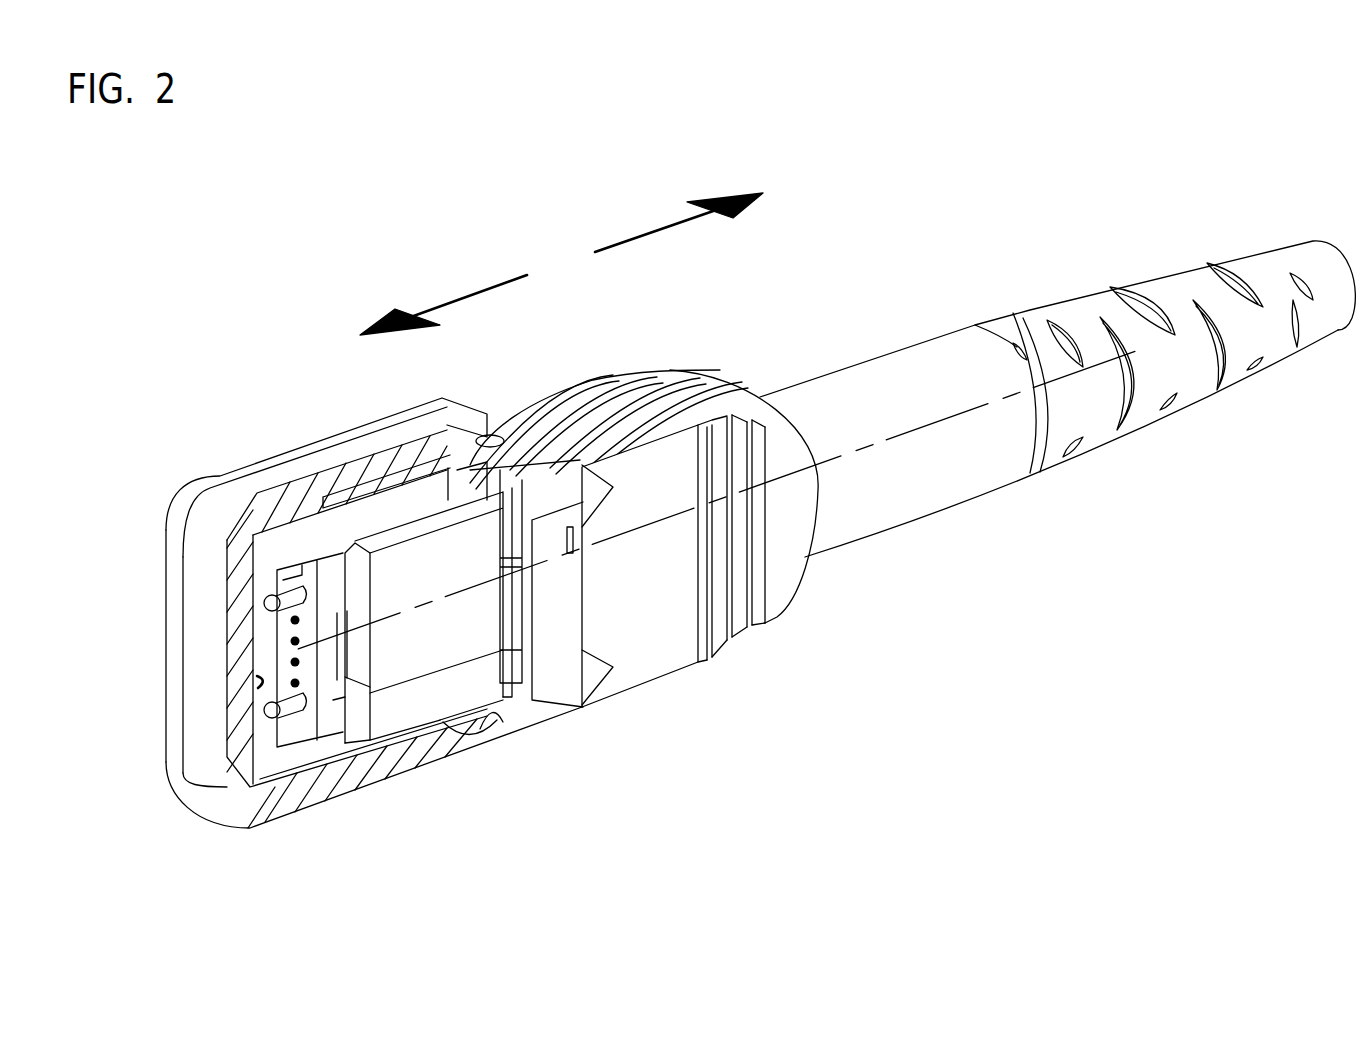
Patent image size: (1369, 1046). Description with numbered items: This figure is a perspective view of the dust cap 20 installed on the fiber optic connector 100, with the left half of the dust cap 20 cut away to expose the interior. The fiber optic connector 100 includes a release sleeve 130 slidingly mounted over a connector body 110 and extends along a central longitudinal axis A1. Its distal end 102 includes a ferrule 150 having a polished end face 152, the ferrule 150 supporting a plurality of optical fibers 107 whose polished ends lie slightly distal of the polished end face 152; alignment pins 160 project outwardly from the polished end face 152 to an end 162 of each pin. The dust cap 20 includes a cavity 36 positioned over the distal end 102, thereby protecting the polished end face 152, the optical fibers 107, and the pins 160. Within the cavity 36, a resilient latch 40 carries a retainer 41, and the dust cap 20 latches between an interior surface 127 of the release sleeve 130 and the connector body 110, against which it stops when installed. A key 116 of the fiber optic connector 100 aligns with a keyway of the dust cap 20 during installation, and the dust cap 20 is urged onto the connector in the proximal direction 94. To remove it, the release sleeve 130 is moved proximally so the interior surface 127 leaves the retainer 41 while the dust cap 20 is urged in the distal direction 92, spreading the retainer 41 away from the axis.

The dust cap 20 is at (412, 402).
The cavity 36 is at (256, 684).
The resilient latch 40 is at (363, 505).
The retainer 41 is at (467, 480).
The distal direction 92 is at (447, 303).
The proximal direction 94 is at (635, 238).
The fiber optic connector 100 is at (597, 380).
The distal end 102 is at (282, 582).
The optical fibers 107 is at (282, 642).
The connector body 110 is at (380, 723).
The key 116 is at (483, 680).
The interior surface 127 is at (498, 713).
The release sleeve 130 is at (558, 400).
The ferrule 150 is at (333, 700).
The polished end face 152 is at (297, 583).
The alignment pins 160 is at (265, 711).
The end 162 is at (265, 603).
The central longitudinal axis A1 is at (920, 430).